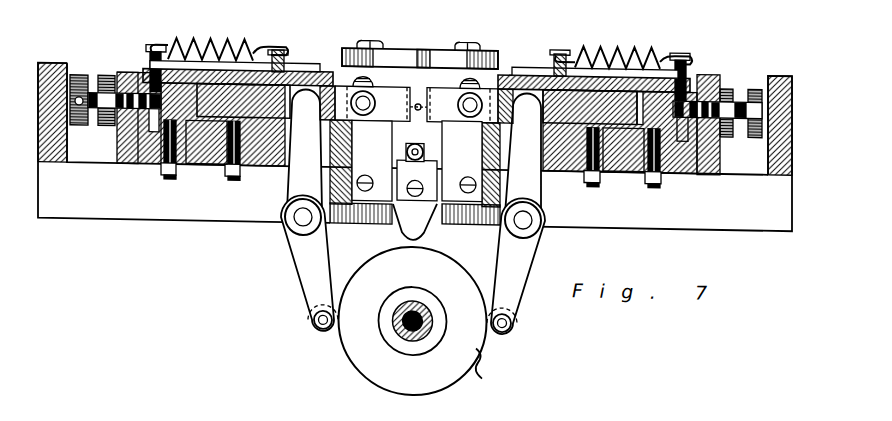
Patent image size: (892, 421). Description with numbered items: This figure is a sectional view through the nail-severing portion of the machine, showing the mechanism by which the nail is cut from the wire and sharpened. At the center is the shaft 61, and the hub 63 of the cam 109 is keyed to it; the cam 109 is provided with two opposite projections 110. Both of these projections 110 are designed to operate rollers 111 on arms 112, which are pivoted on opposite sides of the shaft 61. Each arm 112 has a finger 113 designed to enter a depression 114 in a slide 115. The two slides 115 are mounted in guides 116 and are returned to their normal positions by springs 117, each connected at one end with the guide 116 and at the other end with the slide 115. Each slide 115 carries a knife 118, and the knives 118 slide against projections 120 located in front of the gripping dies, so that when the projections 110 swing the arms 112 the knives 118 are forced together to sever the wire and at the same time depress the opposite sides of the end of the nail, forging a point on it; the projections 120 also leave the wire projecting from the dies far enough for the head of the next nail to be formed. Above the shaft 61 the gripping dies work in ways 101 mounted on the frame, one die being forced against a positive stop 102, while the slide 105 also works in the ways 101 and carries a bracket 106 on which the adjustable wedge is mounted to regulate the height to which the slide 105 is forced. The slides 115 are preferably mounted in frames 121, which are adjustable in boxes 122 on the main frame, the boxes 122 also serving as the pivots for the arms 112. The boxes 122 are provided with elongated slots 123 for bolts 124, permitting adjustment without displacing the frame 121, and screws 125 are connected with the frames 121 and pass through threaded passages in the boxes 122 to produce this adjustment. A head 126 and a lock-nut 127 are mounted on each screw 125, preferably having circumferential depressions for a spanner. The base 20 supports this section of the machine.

The base plate 20 is at (415, 147).
The shaft 61 is at (397, 326).
The hub 63 is at (427, 301).
The ways 101 is at (372, 174).
The positive stop 102 is at (447, 42).
The slide 105 is at (420, 222).
The bracket 106 is at (422, 160).
The cam 109 is at (479, 343).
The projections 110 is at (340, 296).
The rollers 111 is at (315, 327).
The arms 112 is at (307, 258).
The finger 113 is at (306, 90).
The depression 114 is at (515, 66).
The slide 115 is at (247, 97).
The guides 116 is at (206, 68).
The springs 117 is at (233, 50).
The knife 118 is at (462, 161).
The projections 120 is at (372, 160).
The frames 121 is at (157, 52).
The boxes 122 is at (117, 161).
The elongated slots 123 is at (213, 161).
The bolts 124 is at (168, 176).
The screws 125 is at (88, 124).
The head 126 is at (78, 73).
The lock-nut 127 is at (109, 73).